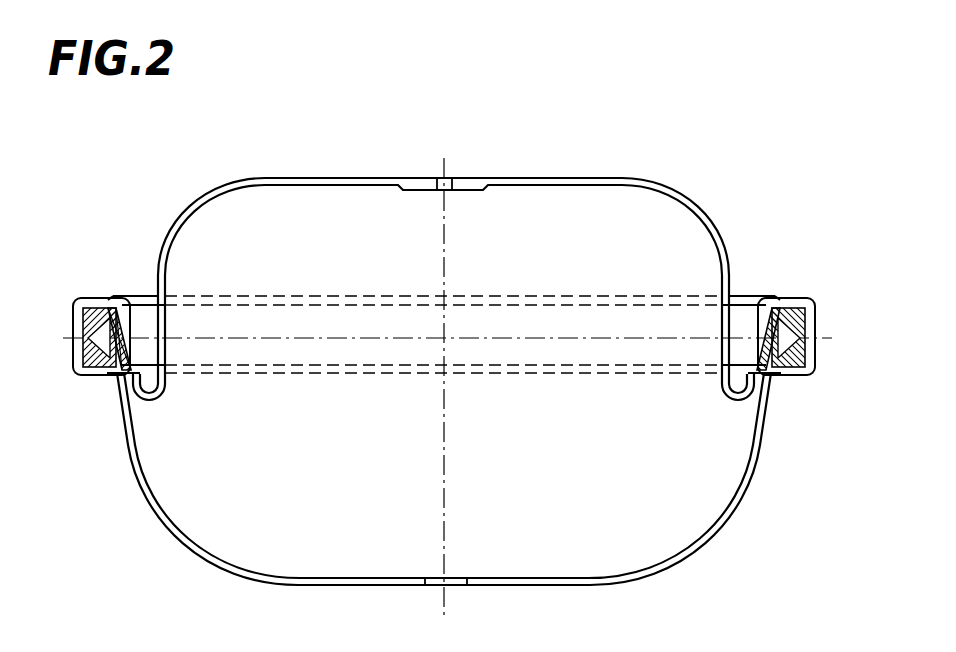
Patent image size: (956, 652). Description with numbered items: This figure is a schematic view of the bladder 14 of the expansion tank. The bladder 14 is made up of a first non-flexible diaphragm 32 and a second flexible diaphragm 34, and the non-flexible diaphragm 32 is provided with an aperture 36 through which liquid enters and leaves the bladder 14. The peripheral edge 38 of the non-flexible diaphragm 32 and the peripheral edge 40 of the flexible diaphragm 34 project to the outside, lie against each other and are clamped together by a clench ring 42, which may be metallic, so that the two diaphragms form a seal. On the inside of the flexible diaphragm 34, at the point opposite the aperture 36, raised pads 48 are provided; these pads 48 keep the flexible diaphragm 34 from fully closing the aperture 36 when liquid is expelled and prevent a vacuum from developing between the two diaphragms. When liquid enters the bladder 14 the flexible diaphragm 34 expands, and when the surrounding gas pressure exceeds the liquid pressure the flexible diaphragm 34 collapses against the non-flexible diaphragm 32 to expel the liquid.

The bladder 14 is at (718, 177).
The first non-flexible diaphragm 32 is at (735, 508).
The second flexible diaphragm 34 is at (722, 254).
The aperture 36 is at (455, 585).
The peripheral edge of the non-flexible diaphragm 38 is at (97, 367).
The peripheral edge of the flexible diaphragm 40 is at (90, 312).
The clench ring 42 is at (808, 296).
The raised pads 48 is at (467, 190).